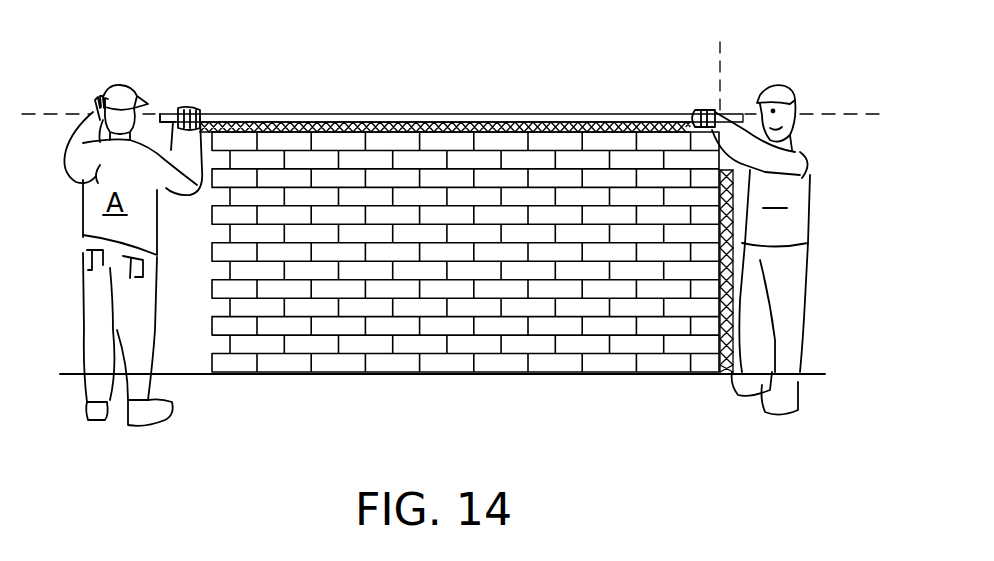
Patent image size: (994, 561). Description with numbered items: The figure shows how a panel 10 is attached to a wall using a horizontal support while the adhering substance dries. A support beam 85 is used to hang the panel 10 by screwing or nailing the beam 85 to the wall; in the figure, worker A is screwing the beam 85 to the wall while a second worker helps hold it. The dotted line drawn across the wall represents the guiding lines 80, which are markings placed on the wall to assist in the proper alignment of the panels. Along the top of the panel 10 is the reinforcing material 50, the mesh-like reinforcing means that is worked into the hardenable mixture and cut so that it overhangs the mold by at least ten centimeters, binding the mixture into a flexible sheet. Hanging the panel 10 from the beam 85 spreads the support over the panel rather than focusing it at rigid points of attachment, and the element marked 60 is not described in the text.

The panel 10 is at (451, 206).
The reinforcing material overhang 50 is at (355, 125).
The support beam 85 is at (268, 113).
The guiding lines 80 is at (50, 113).
The mason B 60 is at (810, 250).